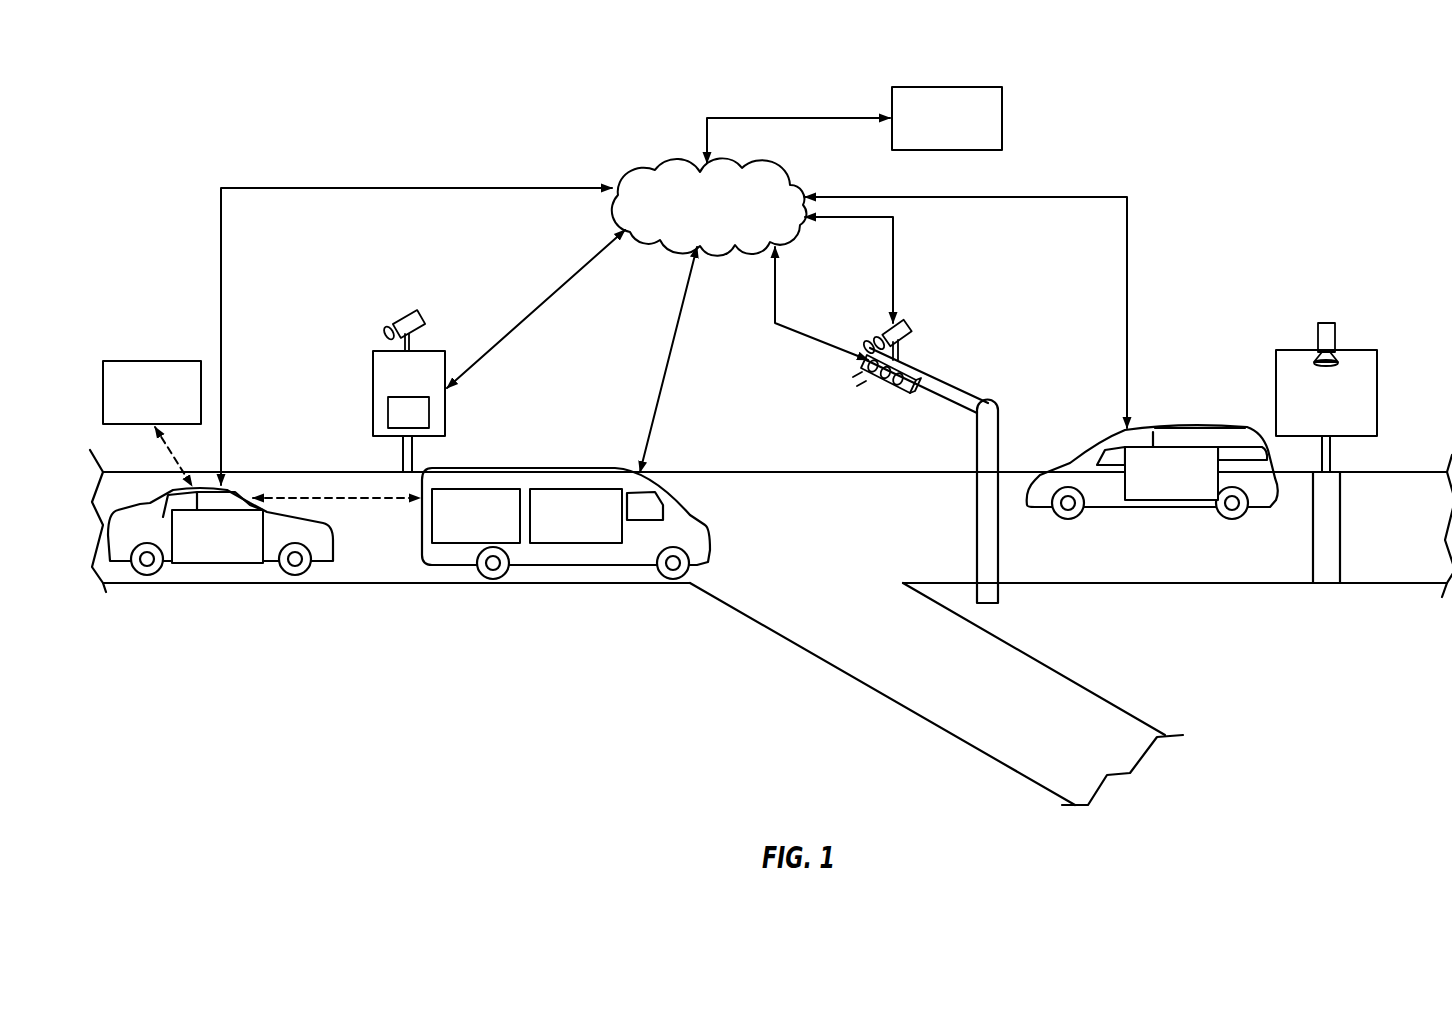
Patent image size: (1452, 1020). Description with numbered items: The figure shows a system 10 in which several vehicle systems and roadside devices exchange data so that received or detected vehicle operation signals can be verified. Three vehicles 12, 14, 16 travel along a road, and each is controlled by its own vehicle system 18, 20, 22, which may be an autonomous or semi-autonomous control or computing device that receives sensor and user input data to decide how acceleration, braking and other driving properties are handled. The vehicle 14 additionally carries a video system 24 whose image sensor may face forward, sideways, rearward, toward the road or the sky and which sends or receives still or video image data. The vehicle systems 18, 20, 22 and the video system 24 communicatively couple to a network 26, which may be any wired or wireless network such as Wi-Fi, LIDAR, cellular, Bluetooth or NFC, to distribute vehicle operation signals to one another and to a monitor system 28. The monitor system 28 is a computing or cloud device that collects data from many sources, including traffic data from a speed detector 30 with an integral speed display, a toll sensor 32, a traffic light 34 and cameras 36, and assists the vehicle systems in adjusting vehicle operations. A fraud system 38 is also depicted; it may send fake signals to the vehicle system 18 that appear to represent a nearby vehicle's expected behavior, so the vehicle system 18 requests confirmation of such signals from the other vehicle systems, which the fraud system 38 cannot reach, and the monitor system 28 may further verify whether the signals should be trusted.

The system 10 is at (1365, 90).
The vehicle 12 is at (332, 530).
The vehicle 14 is at (538, 468).
The vehicle 16 is at (1192, 425).
The vehicle system 18 is at (265, 537).
The vehicle system 20 is at (573, 543).
The vehicle system 22 is at (1173, 500).
The video system 24 is at (477, 543).
The network 26 is at (765, 168).
The monitor system 28 is at (948, 86).
The speed detector 30 is at (423, 316).
The toll sensor 32 is at (1377, 392).
The traffic light 34 is at (890, 382).
The camera 36 is at (371, 385).
The fraud system 38 is at (152, 358).